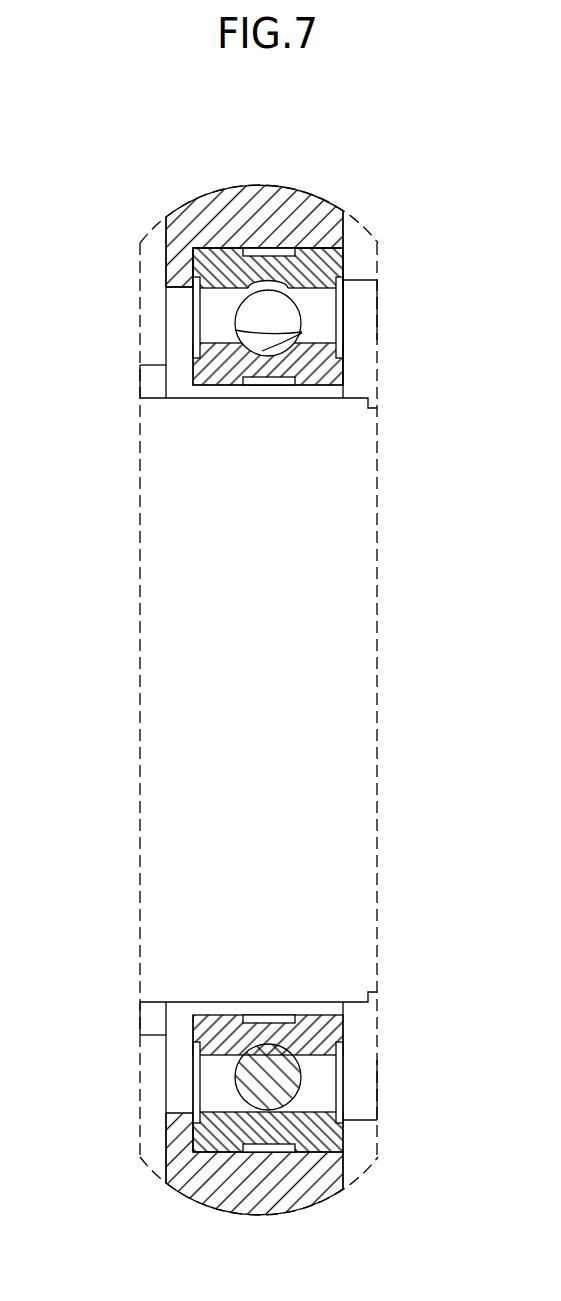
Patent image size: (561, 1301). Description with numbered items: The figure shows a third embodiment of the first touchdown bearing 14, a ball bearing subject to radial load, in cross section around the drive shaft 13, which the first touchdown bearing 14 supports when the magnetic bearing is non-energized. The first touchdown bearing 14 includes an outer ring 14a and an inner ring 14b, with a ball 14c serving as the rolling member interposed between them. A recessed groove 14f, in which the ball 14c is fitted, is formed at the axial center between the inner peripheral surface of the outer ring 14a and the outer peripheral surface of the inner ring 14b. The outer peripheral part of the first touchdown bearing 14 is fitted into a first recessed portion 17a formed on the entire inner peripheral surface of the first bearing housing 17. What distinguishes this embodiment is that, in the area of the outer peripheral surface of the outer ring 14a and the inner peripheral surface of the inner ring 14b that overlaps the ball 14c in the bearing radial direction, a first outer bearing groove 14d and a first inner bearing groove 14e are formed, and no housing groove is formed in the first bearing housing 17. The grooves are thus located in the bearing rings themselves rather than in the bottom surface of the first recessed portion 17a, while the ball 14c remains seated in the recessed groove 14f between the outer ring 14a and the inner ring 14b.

The drive shaft 13 is at (343, 688).
The first touchdown bearing 14 is at (343, 367).
The outer ring 14a is at (345, 264).
The inner ring 14b is at (166, 370).
The ball 14c is at (252, 299).
The first outer bearing groove 14d is at (270, 248).
The first inner bearing groove 14e is at (270, 385).
The recessed groove 14f is at (288, 297).
The first bearing housing 17 is at (292, 221).
The first recessed portion 17a is at (193, 248).